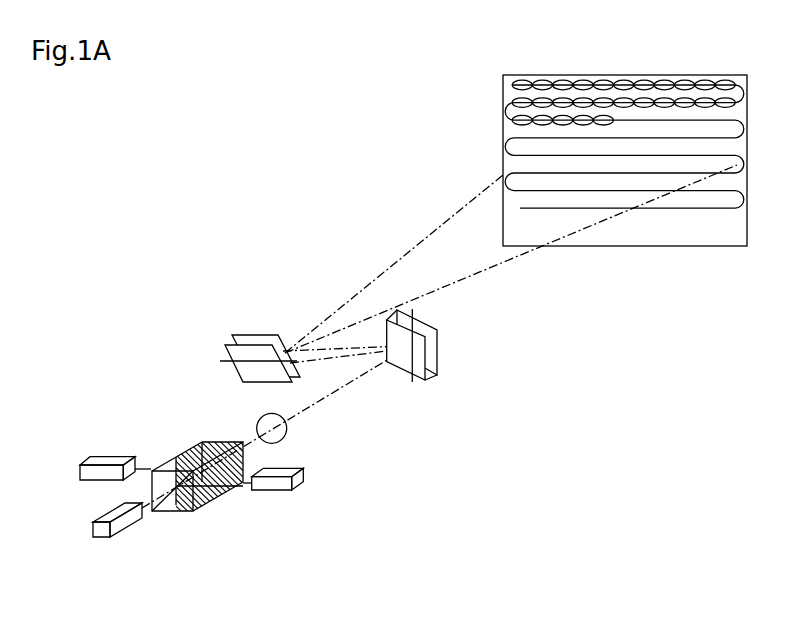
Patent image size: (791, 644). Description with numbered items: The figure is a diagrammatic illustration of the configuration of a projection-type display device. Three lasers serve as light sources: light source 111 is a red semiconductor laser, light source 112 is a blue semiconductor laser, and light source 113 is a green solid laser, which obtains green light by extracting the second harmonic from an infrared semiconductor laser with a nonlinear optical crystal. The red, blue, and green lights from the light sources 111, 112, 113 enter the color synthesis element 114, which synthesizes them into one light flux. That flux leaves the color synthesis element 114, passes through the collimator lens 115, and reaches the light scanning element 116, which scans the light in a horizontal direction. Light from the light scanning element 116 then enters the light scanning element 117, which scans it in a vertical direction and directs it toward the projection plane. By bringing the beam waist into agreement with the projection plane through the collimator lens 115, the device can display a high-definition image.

The light source 111 is at (303, 480).
The light source 112 is at (121, 457).
The light source 113 is at (152, 540).
The color synthesis element 114 is at (207, 503).
The collimator lens 115 is at (287, 431).
The light scanning element 116 is at (437, 357).
The light scanning element 117 is at (225, 350).